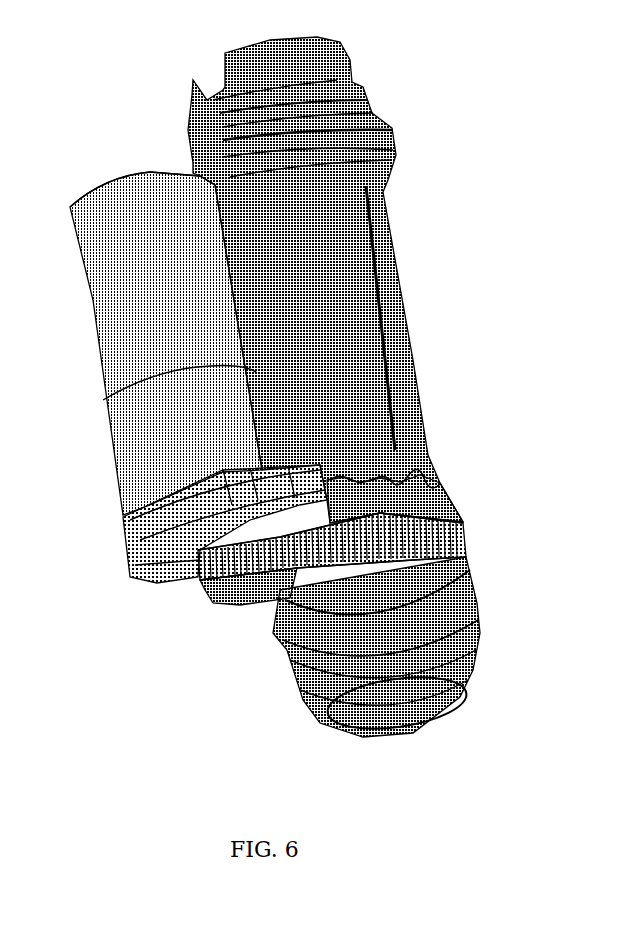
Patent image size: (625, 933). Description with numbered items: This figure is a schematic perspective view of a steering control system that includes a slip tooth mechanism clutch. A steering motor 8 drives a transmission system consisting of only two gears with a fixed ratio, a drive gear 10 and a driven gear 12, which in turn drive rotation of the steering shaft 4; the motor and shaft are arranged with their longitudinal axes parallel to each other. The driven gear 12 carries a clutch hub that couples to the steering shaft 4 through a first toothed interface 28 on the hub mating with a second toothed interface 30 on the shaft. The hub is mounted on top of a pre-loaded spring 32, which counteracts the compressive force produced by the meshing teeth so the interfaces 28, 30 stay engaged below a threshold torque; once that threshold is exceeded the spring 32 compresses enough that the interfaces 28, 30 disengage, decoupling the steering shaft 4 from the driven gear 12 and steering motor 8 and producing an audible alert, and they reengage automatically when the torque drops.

The steering shaft 4 is at (403, 330).
The steering motor 8 is at (87, 323).
The drive gear 10 is at (197, 582).
The driven gear 12 is at (467, 557).
The first toothed interface 28 is at (433, 480).
The second toothed interface 30 is at (430, 440).
The pre-loaded spring 32 is at (273, 607).